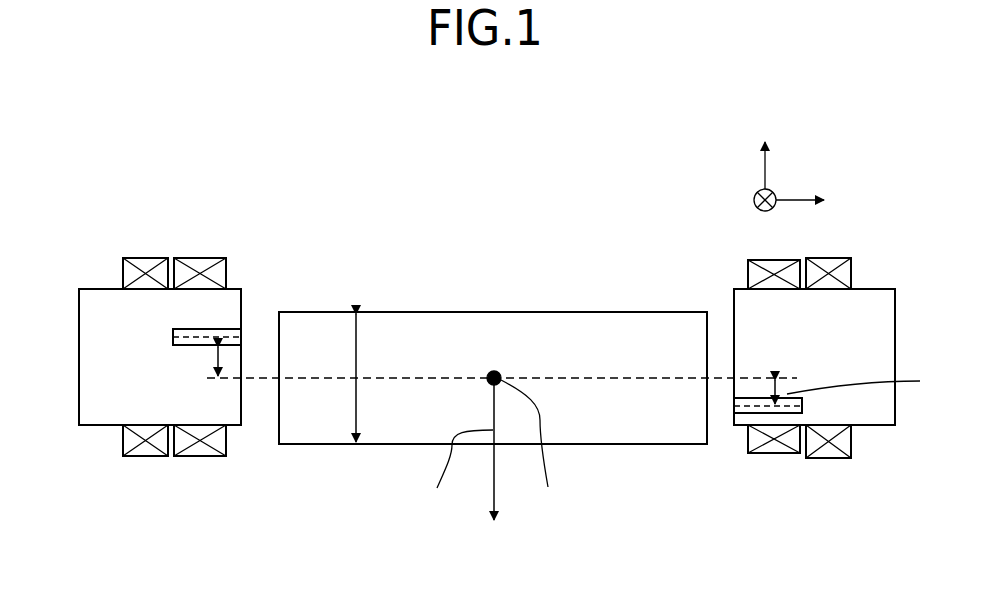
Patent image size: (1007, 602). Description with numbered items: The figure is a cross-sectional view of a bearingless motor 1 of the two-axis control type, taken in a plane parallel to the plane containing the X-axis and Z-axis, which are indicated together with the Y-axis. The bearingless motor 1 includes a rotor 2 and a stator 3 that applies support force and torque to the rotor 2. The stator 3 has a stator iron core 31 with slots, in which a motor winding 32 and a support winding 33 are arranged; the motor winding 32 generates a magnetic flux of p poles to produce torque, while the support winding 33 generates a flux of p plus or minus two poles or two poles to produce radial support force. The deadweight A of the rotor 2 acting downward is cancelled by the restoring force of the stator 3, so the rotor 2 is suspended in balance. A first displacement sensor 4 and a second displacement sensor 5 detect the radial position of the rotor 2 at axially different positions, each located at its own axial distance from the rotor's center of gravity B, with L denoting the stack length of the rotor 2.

The bearingless motor 1 is at (531, 171).
The rotor 2 is at (593, 312).
The stator 3 is at (99, 426).
The stator iron core 31 is at (125, 316).
The motor winding 32 is at (200, 257).
The support winding 33 is at (150, 458).
The first displacement sensor 4 is at (231, 329).
The second displacement sensor 5 is at (742, 421).